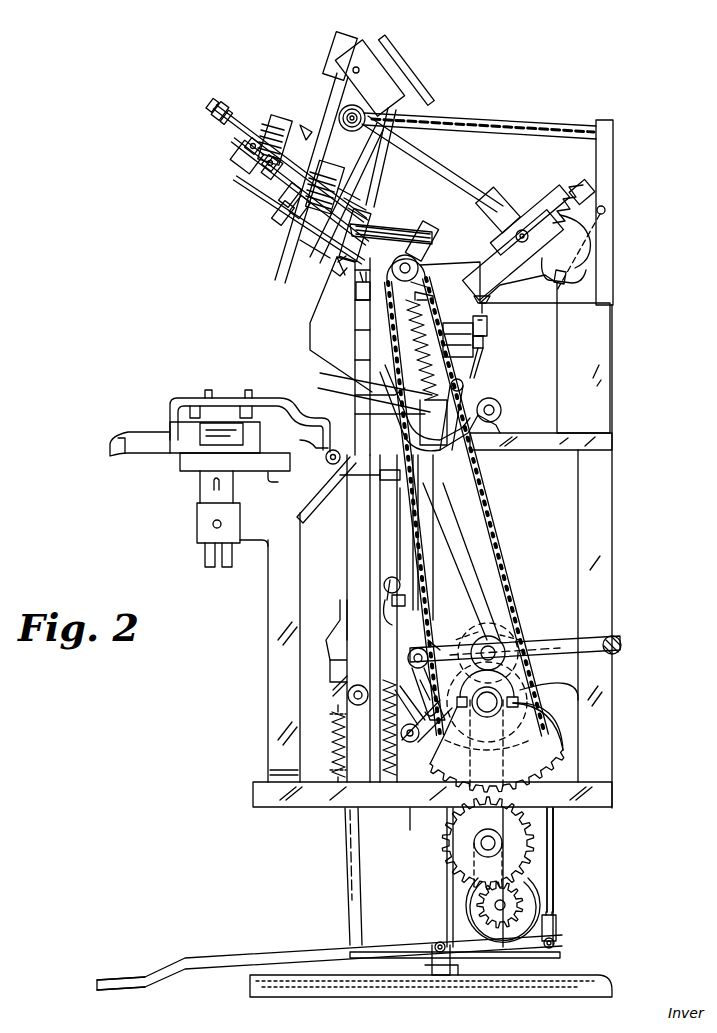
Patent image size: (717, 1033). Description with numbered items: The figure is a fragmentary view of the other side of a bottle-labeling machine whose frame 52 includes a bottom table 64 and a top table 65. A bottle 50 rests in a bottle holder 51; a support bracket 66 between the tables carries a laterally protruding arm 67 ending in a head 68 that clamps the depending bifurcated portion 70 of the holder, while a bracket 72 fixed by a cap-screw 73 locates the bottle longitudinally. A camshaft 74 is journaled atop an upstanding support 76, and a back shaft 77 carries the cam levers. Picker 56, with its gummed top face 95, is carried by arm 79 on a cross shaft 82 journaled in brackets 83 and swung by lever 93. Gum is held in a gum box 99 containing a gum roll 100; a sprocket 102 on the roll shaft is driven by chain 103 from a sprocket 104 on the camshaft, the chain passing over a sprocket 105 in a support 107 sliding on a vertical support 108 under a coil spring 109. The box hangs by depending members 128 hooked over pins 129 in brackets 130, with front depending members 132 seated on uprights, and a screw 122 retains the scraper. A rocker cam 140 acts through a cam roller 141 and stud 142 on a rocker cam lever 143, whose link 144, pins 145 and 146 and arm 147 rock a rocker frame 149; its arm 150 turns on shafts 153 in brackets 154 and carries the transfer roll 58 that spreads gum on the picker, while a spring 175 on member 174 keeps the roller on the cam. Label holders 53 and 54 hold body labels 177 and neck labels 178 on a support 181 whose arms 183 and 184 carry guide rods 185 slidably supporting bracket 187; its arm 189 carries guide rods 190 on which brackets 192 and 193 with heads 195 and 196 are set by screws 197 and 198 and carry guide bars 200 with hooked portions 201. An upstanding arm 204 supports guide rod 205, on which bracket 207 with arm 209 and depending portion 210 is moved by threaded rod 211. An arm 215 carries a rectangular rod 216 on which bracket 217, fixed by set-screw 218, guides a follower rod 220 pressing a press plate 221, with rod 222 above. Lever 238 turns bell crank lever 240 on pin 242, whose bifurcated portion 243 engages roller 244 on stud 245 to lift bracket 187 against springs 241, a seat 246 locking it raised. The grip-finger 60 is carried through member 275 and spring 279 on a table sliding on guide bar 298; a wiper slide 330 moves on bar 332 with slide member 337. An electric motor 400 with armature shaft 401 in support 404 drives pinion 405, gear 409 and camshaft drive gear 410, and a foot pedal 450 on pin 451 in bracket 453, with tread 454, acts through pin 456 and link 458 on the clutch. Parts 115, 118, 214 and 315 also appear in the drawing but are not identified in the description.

The bottle 50 is at (142, 458).
The bottle holder 51 is at (188, 463).
The frame 52 is at (608, 586).
The label holder 53 is at (293, 220).
The label holder 54 is at (306, 128).
The oscillatory picker 56 is at (233, 153).
The transfer roller 58 is at (365, 283).
The grip-finger 60 is at (199, 388).
The bottom table 64 is at (612, 794).
The top table 65 is at (600, 441).
The support bracket 66 is at (275, 690).
The laterally protruding arm 67 is at (252, 540).
The head 68 is at (200, 537).
The depending bifurcated portion 70 is at (212, 568).
The bracket 72 is at (250, 447).
The cap-screw 73 is at (268, 478).
The camshaft 74 is at (487, 716).
The upstanding support 76 is at (558, 812).
The back shaft 77 is at (622, 646).
The arm 79 is at (326, 346).
The cross shaft 82 is at (496, 408).
The bracket 83 is at (500, 426).
The lever 93 is at (462, 390).
The top face 95 is at (290, 197).
The gum box 99 is at (458, 337).
The gum roll 100 is at (322, 316).
The sprocket 102 is at (361, 380).
The chain 103 is at (500, 548).
The sprocket 104 is at (525, 692).
The freely rotatable sprocket 105 is at (412, 262).
The support 107 is at (418, 273).
The substantially vertical support 108 is at (362, 414).
The coil spring 109 is at (362, 396).
The spring seat 115 is at (436, 294).
The screw 118 is at (436, 308).
The screw 122 is at (487, 340).
The depending members 128 is at (478, 350).
The pin 129 is at (472, 380).
The supporting bracket 130 is at (462, 388).
The depending members 132 is at (358, 396).
The rocker cam 140 is at (497, 746).
The cam roller 141 is at (490, 646).
The supporting stud 142 is at (488, 635).
The rocker cam lever 143 is at (558, 640).
The depending link 144 is at (430, 648).
The pin 145 is at (425, 650).
The pin 146 is at (440, 748).
The arm 147 is at (436, 738).
The rocker frame 149 is at (316, 665).
The upwardly extending arm 150 is at (350, 618).
The coaxial shafts 153 is at (348, 696).
The upstanding brackets 154 is at (336, 795).
The protruding member 174 is at (414, 650).
The tensioned coiled spring 175 is at (380, 796).
The pack of body labels 177 is at (313, 250).
The pack of neck labels 178 is at (263, 180).
The support 181 is at (583, 368).
The outwardly extending arm 183 is at (513, 300).
The outwardly extending arm 184 is at (575, 196).
The guide rods 185 is at (536, 210).
The bracket 187 is at (516, 280).
The outwardly extending arm 189 is at (458, 278).
The parallel guide rods 190 is at (220, 105).
The bracket 192 is at (340, 278).
The bracket 193 is at (303, 170).
The head 195 is at (329, 245).
The head 196 is at (307, 233).
The screw 197 is at (330, 272).
The screw 198 is at (290, 212).
The guide bars 200 is at (336, 146).
The hooked portions 201 is at (228, 160).
The upstanding arm 204 is at (370, 207).
The guide rod 205 is at (367, 217).
The bracket 207 is at (343, 187).
The arm 209 is at (360, 187).
The depending portions 210 is at (367, 227).
The threaded rod 211 is at (367, 233).
The block 214 is at (237, 163).
The outwardly extending arm 215 is at (512, 190).
The rectangular rod 216 is at (340, 40).
The bracket 217 is at (381, 71).
The set-screw 218 is at (352, 69).
The follower rod 220 is at (313, 93).
The press plate 221 is at (380, 150).
The upwardly extending rod 222 is at (382, 40).
The lever 238 is at (546, 128).
The bell crank lever 240 is at (615, 172).
The springs 241 is at (580, 238).
The pin 242 is at (606, 211).
The bifurcated portion 243 is at (575, 258).
The roller 244 is at (490, 178).
The stud 245 is at (512, 236).
The depressed seat 246 is at (565, 280).
The member 275 is at (318, 434).
The coil spring 279 is at (295, 493).
The rectangular guide bar 298 is at (432, 512).
The rod 315 is at (440, 528).
The wiper slide 330 is at (400, 546).
The bar 332 is at (412, 572).
The slide member 337 is at (355, 498).
The electric motor 400 is at (540, 893).
The armature shaft 401 is at (505, 905).
The support 404 is at (555, 966).
The driving pinion 405 is at (495, 905).
The gear 409 is at (487, 872).
The camshaft drive gear 410 is at (455, 798).
The foot pedal 450 is at (228, 960).
The pin 451 is at (437, 942).
The bracket 453 is at (446, 978).
The tread 454 is at (128, 978).
The pin 456 is at (556, 942).
The adjustable link 458 is at (556, 910).